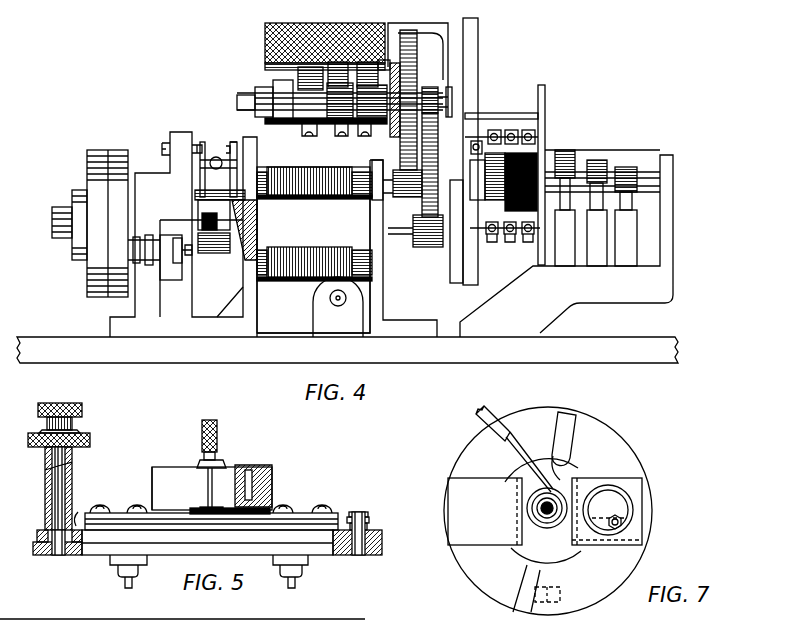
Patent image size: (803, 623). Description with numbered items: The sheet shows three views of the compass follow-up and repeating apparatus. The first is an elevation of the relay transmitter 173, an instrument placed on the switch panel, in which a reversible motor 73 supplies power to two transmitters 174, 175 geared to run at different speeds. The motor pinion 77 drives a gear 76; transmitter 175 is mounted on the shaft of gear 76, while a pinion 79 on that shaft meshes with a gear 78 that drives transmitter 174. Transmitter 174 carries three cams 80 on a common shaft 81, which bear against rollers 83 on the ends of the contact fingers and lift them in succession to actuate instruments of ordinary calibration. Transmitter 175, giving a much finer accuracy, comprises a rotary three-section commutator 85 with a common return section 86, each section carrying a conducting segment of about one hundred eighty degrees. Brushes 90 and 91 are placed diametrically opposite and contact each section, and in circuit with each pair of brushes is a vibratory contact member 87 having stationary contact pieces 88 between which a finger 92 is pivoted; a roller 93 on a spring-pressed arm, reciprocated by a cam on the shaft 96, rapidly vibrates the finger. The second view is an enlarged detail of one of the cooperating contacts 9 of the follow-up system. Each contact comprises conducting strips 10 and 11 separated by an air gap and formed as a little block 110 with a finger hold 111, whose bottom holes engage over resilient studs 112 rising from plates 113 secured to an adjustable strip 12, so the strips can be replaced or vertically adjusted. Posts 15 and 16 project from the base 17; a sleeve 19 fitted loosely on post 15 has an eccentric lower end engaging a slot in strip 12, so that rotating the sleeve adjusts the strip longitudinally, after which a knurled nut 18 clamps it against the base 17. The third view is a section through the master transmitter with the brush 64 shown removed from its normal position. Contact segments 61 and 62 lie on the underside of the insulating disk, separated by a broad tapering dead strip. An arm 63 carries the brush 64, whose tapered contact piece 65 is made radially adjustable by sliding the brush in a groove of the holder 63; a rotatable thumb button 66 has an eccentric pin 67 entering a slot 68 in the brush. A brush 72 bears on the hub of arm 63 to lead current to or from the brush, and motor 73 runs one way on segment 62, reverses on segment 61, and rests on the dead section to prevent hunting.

In FIG. 4, the transmitter 174 is at (266, 52).
In FIG. 4, the rollers 83 is at (383, 67).
In FIG. 4, the gear 78 is at (410, 62).
In FIG. 4, the shaft 81 is at (425, 93).
In FIG. 4, the cams 80 is at (341, 133).
In FIG. 4, the pinion 79 is at (397, 167).
In FIG. 4, the reversible motor 73 is at (314, 252).
In FIG. 4, the gear 76 is at (423, 202).
In FIG. 4, the motor pinion 77 is at (443, 248).
In FIG. 4, the relay transmitter 173 is at (498, 151).
In FIG. 4, the brush 90 is at (492, 128).
In FIG. 4, the rotary three section commutator 85 is at (511, 182).
In FIG. 4, the common return section 86 is at (476, 190).
In FIG. 4, the brush 91 is at (494, 243).
In FIG. 4, the finger 92 is at (562, 195).
In FIG. 4, the stationary contact piece 88 is at (565, 238).
In FIG. 4, the roller 93 is at (600, 164).
In FIG. 4, the shaft 96 is at (652, 174).
In FIG. 4, the vibratory contact member 87 is at (633, 245).
In FIG. 4, the transmitter 175 is at (540, 158).
In FIG. 5, the knurled nut 18 is at (80, 410).
In FIG. 5, the sleeve 19 is at (72, 468).
In FIG. 5, the post 15 is at (59, 557).
In FIG. 5, the plates 113 is at (119, 513).
In FIG. 5, the contacts 9 is at (299, 510).
In FIG. 5, the conducting strip 10 is at (212, 490).
In FIG. 5, the block 110 is at (190, 467).
In FIG. 5, the resilient studs 112 is at (246, 466).
In FIG. 5, the conducting strip 11 is at (219, 490).
In FIG. 5, the finger hold 111 is at (218, 432).
In FIG. 5, the adjustable strip 12 is at (381, 532).
In FIG. 5, the post 16 is at (373, 553).
In FIG. 5, the base 17 is at (380, 553).
In FIG. 7, the contact segment 62 is at (628, 452).
In FIG. 7, the brush 72 is at (547, 488).
In FIG. 7, the arm 63 is at (485, 511).
In FIG. 7, the rotatable thumb button 66 is at (608, 486).
In FIG. 7, the slot 68 is at (608, 508).
In FIG. 7, the eccentric pin 67 is at (622, 523).
In FIG. 7, the contact segment 61 is at (463, 447).
In FIG. 7, the brush 64 is at (556, 588).
In FIG. 7, the contact piece 65 is at (547, 584).